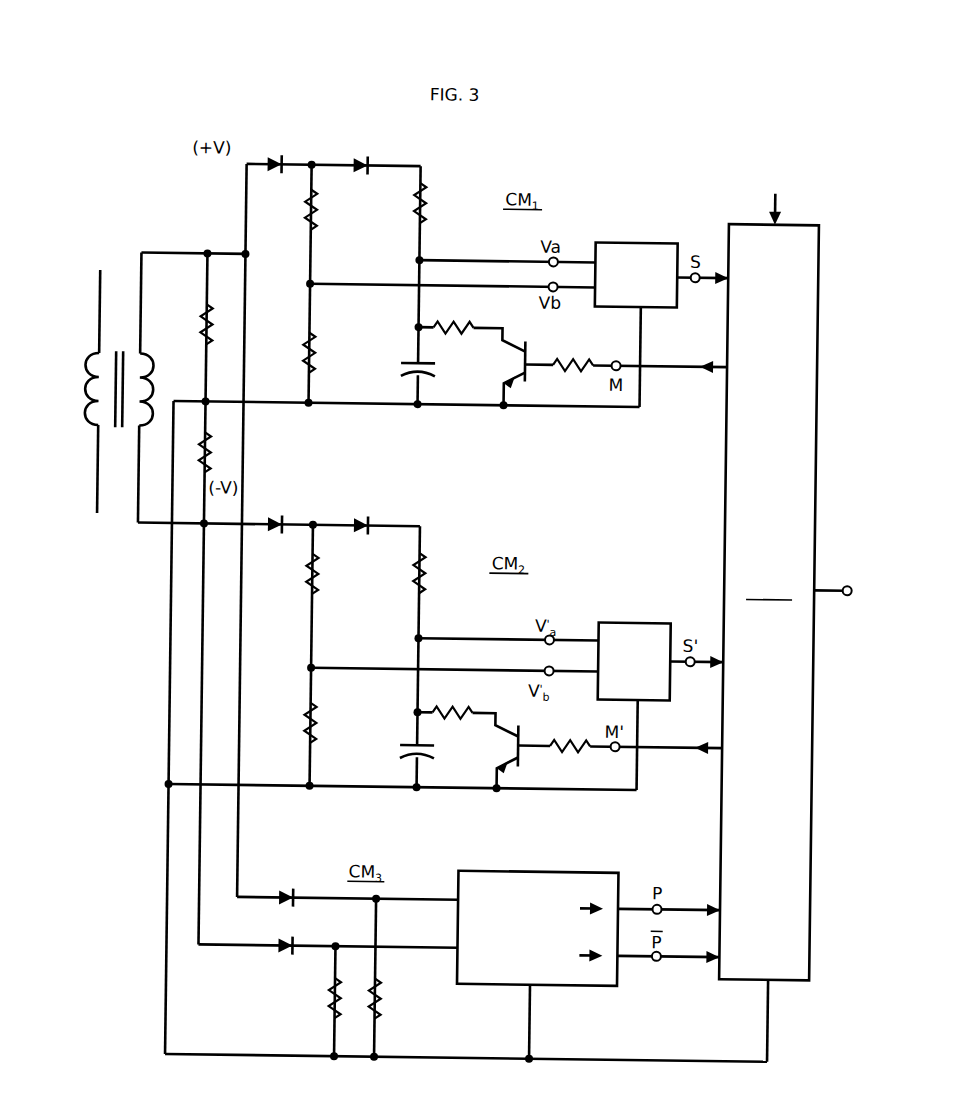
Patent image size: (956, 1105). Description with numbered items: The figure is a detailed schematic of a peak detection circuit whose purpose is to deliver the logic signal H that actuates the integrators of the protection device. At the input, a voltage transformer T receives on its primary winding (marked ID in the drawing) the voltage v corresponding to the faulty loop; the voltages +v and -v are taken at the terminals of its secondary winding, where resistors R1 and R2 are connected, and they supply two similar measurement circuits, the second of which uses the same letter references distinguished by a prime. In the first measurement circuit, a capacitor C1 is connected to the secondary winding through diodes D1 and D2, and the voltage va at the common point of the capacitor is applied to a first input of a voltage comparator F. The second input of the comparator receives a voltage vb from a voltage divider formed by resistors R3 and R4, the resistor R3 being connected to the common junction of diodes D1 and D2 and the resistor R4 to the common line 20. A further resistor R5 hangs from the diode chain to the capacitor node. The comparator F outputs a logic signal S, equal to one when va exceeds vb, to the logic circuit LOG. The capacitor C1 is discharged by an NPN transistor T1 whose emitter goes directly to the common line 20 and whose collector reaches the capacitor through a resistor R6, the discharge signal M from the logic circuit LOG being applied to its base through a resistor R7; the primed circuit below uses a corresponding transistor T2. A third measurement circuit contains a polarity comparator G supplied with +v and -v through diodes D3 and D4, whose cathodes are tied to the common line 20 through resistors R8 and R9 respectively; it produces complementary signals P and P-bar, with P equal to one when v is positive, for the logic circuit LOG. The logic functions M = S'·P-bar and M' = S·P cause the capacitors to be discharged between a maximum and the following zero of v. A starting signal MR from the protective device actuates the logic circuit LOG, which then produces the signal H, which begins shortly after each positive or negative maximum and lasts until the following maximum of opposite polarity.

The common line 20 is at (171, 646).
The voltage transformer T is at (119, 387).
The input device / detector winding ID is at (100, 257).
The resistor R1 is at (201, 322).
The resistor R2 is at (208, 460).
The resistor R3 is at (314, 211).
The resistor R4 is at (306, 356).
The resistor R5 is at (423, 205).
The resistor R6 is at (462, 323).
The resistor R7 is at (574, 373).
The resistor R8 is at (389, 1006).
The resistor R9 is at (332, 1000).
The diode D1 is at (272, 160).
The diode D2 is at (357, 158).
The diode D3 is at (287, 894).
The diode D4 is at (288, 954).
The capacitor C1 is at (406, 366).
The NPN transistor T1 is at (531, 378).
The transistor T2 is at (524, 760).
The voltage comparator F is at (625, 253).
The polarity comparator G is at (551, 975).
The logic circuit LOG is at (769, 602).
The starting signal MR is at (775, 199).
The logic signal H is at (834, 580).